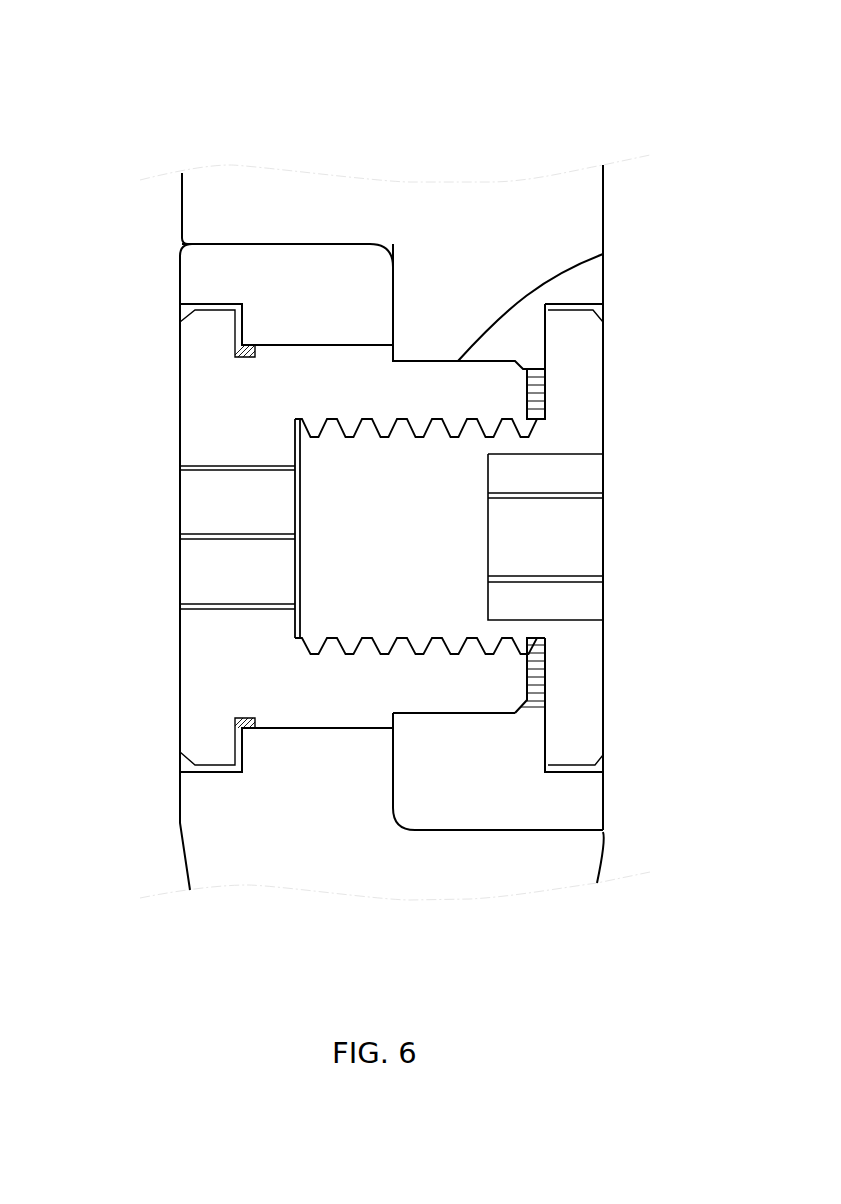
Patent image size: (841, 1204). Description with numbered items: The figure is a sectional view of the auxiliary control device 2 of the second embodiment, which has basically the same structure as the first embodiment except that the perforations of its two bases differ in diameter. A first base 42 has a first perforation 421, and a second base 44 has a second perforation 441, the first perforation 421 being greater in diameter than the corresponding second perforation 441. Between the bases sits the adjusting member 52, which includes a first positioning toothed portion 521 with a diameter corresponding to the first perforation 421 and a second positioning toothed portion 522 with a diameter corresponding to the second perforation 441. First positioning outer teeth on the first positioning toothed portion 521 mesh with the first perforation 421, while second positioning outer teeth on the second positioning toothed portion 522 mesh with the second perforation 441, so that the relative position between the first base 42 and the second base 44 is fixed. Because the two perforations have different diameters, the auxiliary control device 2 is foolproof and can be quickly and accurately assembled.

The auxiliary control device 2 is at (146, 126).
The first base 42 is at (225, 853).
The first perforation 421 is at (317, 345).
The second base 44 is at (552, 192).
The second perforation 441 is at (603, 254).
The adjusting member 52 is at (230, 632).
The first positioning toothed portion 521 is at (322, 385).
The second positioning toothed portion 522 is at (485, 397).